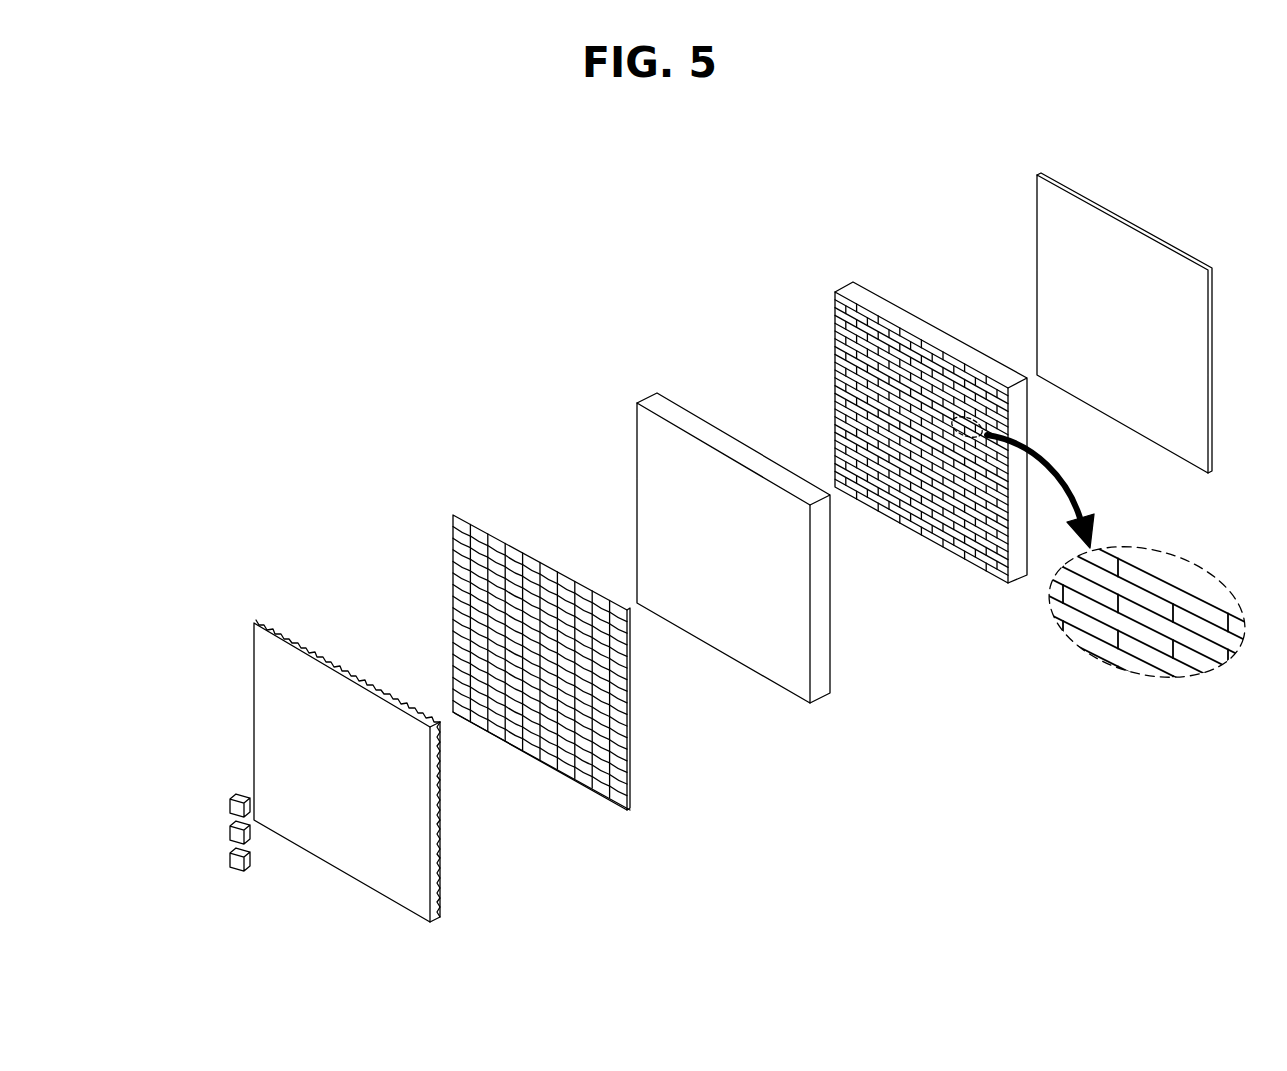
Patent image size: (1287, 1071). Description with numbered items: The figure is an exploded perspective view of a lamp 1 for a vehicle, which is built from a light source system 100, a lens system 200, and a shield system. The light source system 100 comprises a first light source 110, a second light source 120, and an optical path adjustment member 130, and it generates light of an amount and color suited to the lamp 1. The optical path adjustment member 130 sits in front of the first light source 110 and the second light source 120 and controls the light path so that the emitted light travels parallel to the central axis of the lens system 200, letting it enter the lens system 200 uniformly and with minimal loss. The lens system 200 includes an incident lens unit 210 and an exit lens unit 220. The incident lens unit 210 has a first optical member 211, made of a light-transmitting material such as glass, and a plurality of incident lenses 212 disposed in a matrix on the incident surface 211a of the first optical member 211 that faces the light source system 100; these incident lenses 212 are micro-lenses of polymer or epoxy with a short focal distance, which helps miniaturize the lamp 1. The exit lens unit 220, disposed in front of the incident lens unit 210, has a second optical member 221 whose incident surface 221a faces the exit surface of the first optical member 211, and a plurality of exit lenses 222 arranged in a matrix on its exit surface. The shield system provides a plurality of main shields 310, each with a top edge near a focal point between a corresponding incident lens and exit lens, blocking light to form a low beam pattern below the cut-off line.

The lamp for a vehicle 1 is at (351, 262).
The light source system 100 is at (337, 925).
The first light source 110 is at (250, 836).
The second light source 120 is at (234, 804).
The optical path adjustment member 130 is at (328, 853).
The lens system 200 is at (885, 117).
The incident lens unit 210 is at (558, 357).
The first optical member 211 is at (653, 400).
The incident surface 211a is at (772, 660).
The incident lenses 212 is at (460, 512).
The exit lens unit 220 is at (973, 121).
The second optical member 221 is at (862, 291).
The incident surface 221a is at (967, 553).
The exit lenses 222 is at (1052, 182).
The main shields 310 is at (1193, 640).